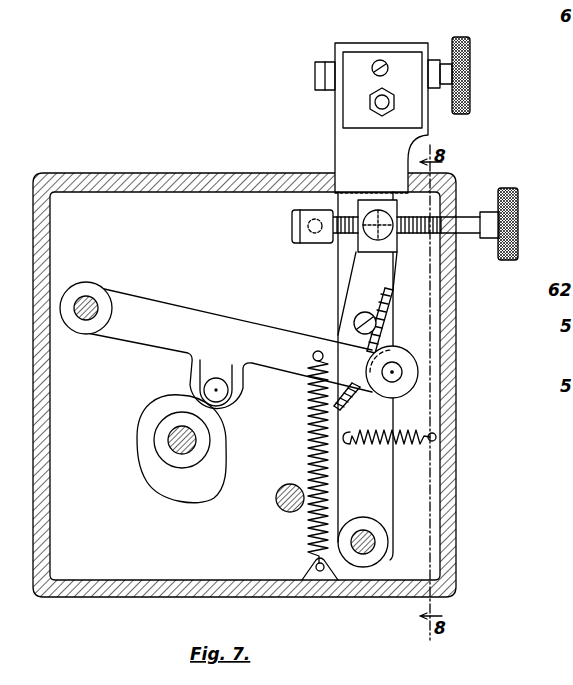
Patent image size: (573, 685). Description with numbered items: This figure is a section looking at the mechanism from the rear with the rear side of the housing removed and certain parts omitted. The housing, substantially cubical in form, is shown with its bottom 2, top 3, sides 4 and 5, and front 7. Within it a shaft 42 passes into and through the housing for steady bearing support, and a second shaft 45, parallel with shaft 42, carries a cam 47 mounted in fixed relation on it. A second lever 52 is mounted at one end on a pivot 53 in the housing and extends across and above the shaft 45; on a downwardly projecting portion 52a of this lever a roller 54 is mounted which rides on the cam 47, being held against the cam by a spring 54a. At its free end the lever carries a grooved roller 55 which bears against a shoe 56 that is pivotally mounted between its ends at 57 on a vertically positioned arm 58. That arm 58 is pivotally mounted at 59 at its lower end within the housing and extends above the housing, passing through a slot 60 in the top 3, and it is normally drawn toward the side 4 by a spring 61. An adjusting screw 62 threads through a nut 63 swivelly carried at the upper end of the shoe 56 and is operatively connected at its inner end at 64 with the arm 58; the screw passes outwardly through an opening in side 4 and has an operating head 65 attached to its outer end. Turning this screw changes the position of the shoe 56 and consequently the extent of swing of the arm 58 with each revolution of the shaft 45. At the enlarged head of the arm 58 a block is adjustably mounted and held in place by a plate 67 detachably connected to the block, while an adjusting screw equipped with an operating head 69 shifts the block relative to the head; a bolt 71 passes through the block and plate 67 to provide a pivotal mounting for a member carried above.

The bottom 2 is at (185, 585).
The top 3 is at (238, 185).
The side 4 is at (450, 418).
The side 5 is at (35, 430).
The front 7 is at (145, 555).
The shaft 42 is at (283, 508).
The second shaft 45 is at (170, 445).
The cam 47 is at (190, 488).
The second lever 52 is at (208, 322).
The downwardly projecting portion 52a is at (205, 372).
The pivot 53 is at (88, 298).
The roller 54 is at (232, 410).
The spring 54a is at (305, 437).
The grooved roller 55 is at (410, 368).
The shoe 56 is at (373, 293).
The pivot 57 is at (372, 326).
The arm 58 is at (380, 478).
The pivot 59 is at (375, 542).
The slot 60 is at (318, 178).
The spring 61 is at (385, 452).
The adjusting screw 62 is at (460, 220).
The nut 63 is at (378, 222).
The inner end connection 64 is at (315, 237).
The operating head 65 is at (518, 240).
The plate 67 is at (400, 62).
The operating head 69 is at (468, 80).
The bolt 71 is at (392, 108).